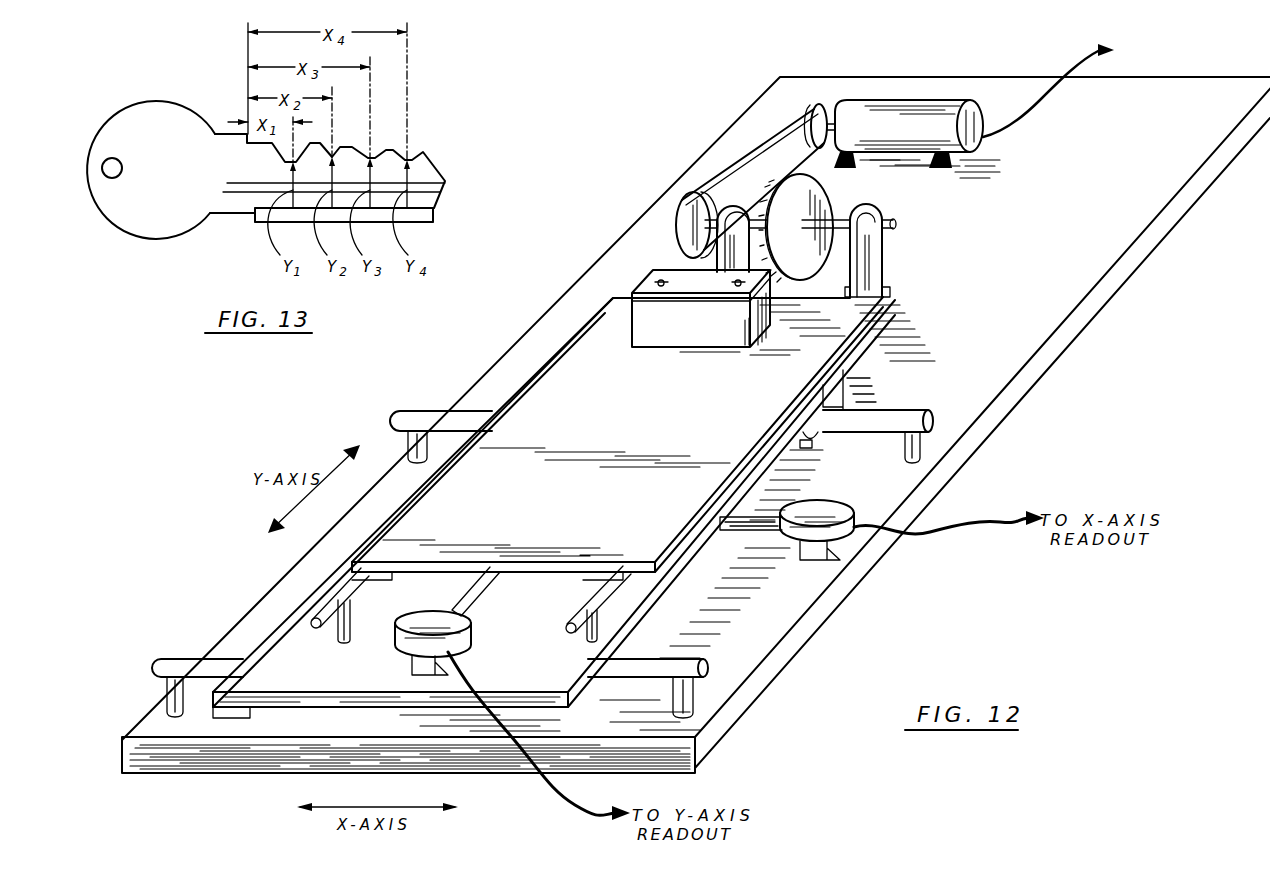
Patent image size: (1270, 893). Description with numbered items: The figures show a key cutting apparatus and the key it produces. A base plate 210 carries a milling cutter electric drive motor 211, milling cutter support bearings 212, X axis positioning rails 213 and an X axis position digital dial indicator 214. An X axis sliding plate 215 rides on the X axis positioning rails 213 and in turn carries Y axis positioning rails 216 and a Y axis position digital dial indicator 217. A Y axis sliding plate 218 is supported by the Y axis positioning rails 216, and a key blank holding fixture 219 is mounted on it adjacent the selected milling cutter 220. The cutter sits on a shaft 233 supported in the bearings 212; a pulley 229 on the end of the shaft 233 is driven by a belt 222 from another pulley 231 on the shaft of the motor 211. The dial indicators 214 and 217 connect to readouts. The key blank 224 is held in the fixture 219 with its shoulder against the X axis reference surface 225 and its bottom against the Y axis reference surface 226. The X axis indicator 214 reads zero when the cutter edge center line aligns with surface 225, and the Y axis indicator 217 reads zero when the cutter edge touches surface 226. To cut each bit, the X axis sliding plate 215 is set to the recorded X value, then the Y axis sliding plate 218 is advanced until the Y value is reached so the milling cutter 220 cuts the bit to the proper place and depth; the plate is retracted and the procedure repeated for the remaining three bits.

In FIG. 12, the base plate 210 is at (1043, 362).
In FIG. 12, the milling cutter electric drive motor 211 is at (940, 100).
In FIG. 12, the milling cutter support bearings 212 is at (717, 260).
In FIG. 12, the X axis positioning rails 213 is at (935, 422).
In FIG. 12, the X axis position digital dial indicator 214 is at (827, 510).
In FIG. 12, the X axis sliding plate 215 is at (677, 581).
In FIG. 12, the Y axis positioning rails 216 is at (308, 634).
In FIG. 12, the Y axis position digital dial indicator 217 is at (408, 653).
In FIG. 12, the Y axis sliding plate 218 is at (720, 517).
In FIG. 13, the key blank holding fixture 219 is at (403, 213).
In FIG. 12, the key blank holding fixture 219 is at (655, 333).
In FIG. 12, the milling cutter 220 is at (808, 116).
In FIG. 12, the belt 222 is at (757, 145).
In FIG. 13, the key blank 224 is at (140, 103).
In FIG. 13, the X axis reference surface 225 is at (256, 213).
In FIG. 13, the Y axis reference surface 226 is at (435, 209).
In FIG. 12, the pulley 229 is at (700, 198).
In FIG. 12, the pulley 231 is at (818, 104).
In FIG. 12, the shaft 233 is at (840, 213).